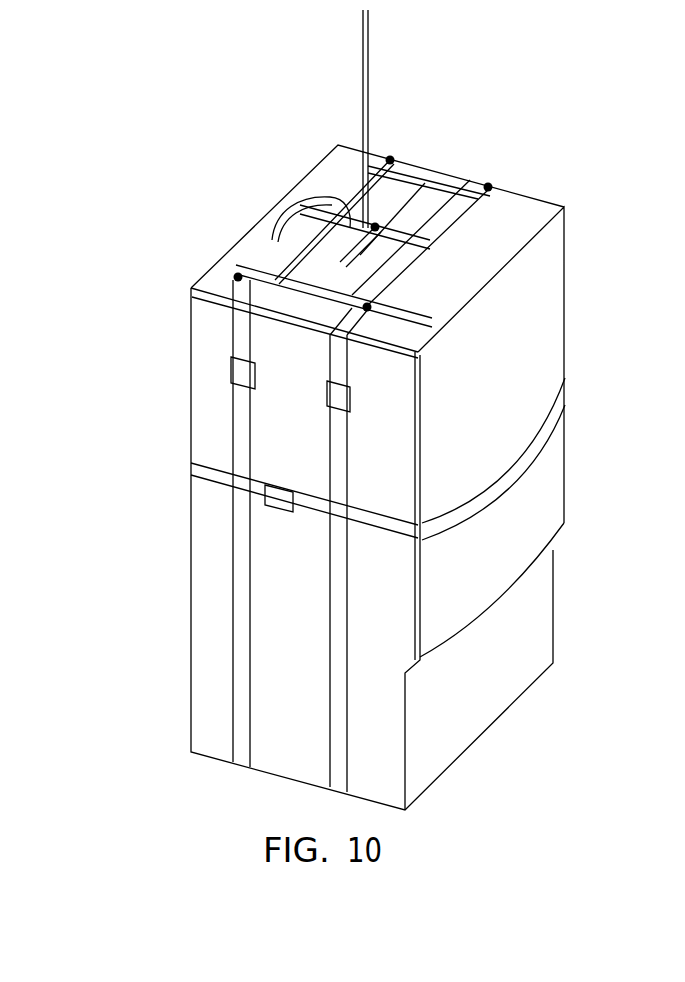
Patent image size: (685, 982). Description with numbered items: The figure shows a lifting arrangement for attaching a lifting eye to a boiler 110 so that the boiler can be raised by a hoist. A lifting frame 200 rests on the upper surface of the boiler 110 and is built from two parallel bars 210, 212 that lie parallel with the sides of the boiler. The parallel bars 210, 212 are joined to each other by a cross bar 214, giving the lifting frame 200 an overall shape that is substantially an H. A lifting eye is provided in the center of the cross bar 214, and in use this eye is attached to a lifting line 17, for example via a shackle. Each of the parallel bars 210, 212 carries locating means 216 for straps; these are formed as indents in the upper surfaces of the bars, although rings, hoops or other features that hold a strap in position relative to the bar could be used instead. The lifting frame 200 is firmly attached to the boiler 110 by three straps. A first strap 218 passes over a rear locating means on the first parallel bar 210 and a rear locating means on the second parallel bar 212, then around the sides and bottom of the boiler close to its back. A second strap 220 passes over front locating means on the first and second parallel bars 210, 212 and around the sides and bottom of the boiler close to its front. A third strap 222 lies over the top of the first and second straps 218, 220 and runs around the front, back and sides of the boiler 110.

The lifting line 17 is at (374, 116).
The boiler 110 is at (531, 360).
The lifting frame 200 is at (450, 176).
The first parallel bar 210 is at (556, 214).
The second parallel bar 212 is at (280, 280).
The cross bar 214 is at (352, 232).
The locating means 216 is at (391, 159).
The first strap 218 is at (240, 421).
The second strap 220 is at (350, 437).
The third strap 222 is at (557, 430).